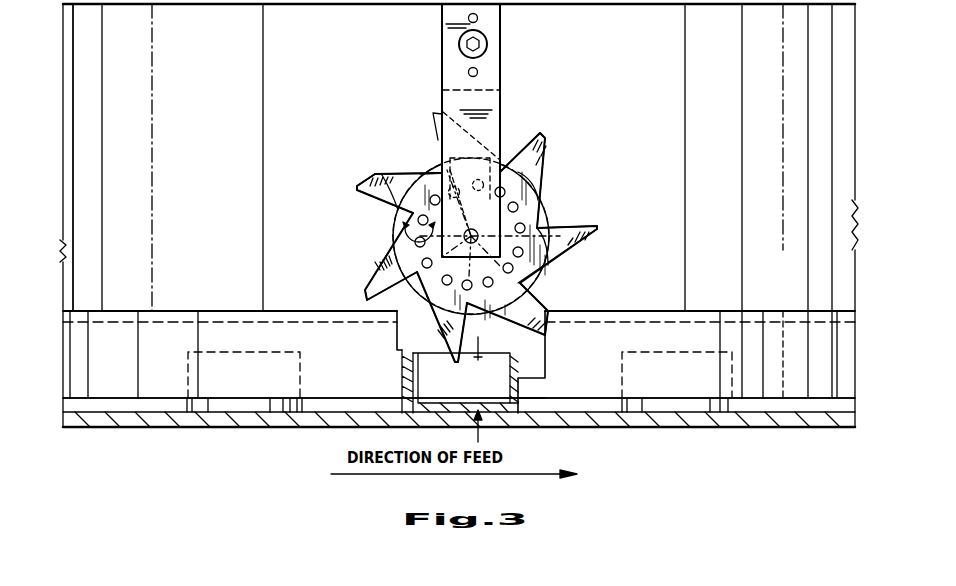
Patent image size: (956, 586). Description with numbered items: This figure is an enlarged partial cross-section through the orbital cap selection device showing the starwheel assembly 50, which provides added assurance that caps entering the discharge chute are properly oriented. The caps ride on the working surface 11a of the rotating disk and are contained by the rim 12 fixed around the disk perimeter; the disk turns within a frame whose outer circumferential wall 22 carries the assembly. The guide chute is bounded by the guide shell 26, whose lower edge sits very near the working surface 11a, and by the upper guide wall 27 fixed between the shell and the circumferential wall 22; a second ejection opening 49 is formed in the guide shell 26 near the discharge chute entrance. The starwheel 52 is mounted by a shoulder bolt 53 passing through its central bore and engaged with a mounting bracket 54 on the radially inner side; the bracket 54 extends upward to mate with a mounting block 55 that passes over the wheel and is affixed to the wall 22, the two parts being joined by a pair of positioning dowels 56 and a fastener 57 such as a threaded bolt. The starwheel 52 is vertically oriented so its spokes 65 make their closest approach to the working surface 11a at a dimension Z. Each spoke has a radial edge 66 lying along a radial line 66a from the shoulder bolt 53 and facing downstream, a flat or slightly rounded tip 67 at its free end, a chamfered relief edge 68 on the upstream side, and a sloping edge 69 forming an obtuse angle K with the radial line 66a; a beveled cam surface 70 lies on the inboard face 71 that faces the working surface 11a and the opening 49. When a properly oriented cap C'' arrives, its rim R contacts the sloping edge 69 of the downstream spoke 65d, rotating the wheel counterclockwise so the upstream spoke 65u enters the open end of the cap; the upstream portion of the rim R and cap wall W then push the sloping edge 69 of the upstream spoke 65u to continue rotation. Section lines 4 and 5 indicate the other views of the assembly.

The section line 4- 4 is at (755, 97).
The section line 5- 5 is at (652, 228).
The working surface 11a is at (248, 407).
The rim 12 is at (590, 412).
The outer circumferential wall 22 is at (142, 157).
The guide shell 26 is at (459, 361).
The upper guide wall 27 is at (788, 300).
The second ejection opening 49 is at (547, 400).
The starwheel assembly 50 is at (350, 124).
The starwheel 52 is at (548, 160).
The shoulder bolt 53 is at (471, 236).
The mounting bracket 54 is at (442, 78).
The mounting block 55 is at (443, 65).
The positioning dowels 56 is at (512, 72).
The fastener 57 is at (487, 44).
The spokes 65 is at (600, 228).
The downstream spoke 65d is at (540, 305).
The upstream spoke 65u is at (428, 341).
The radial edge 66 is at (372, 205).
The radial line 66a is at (417, 163).
The tip 67 is at (357, 190).
The relief edge 68 is at (363, 293).
The sloping edge 69 is at (380, 267).
The beveled cam surface 70 is at (383, 280).
The inboard face 71 is at (540, 200).
The obtuse angle K is at (406, 226).
The rim of the cap R is at (518, 350).
The cap wall W is at (422, 367).
The dimension Z is at (461, 370).
The properly oriented cap C'' is at (520, 429).